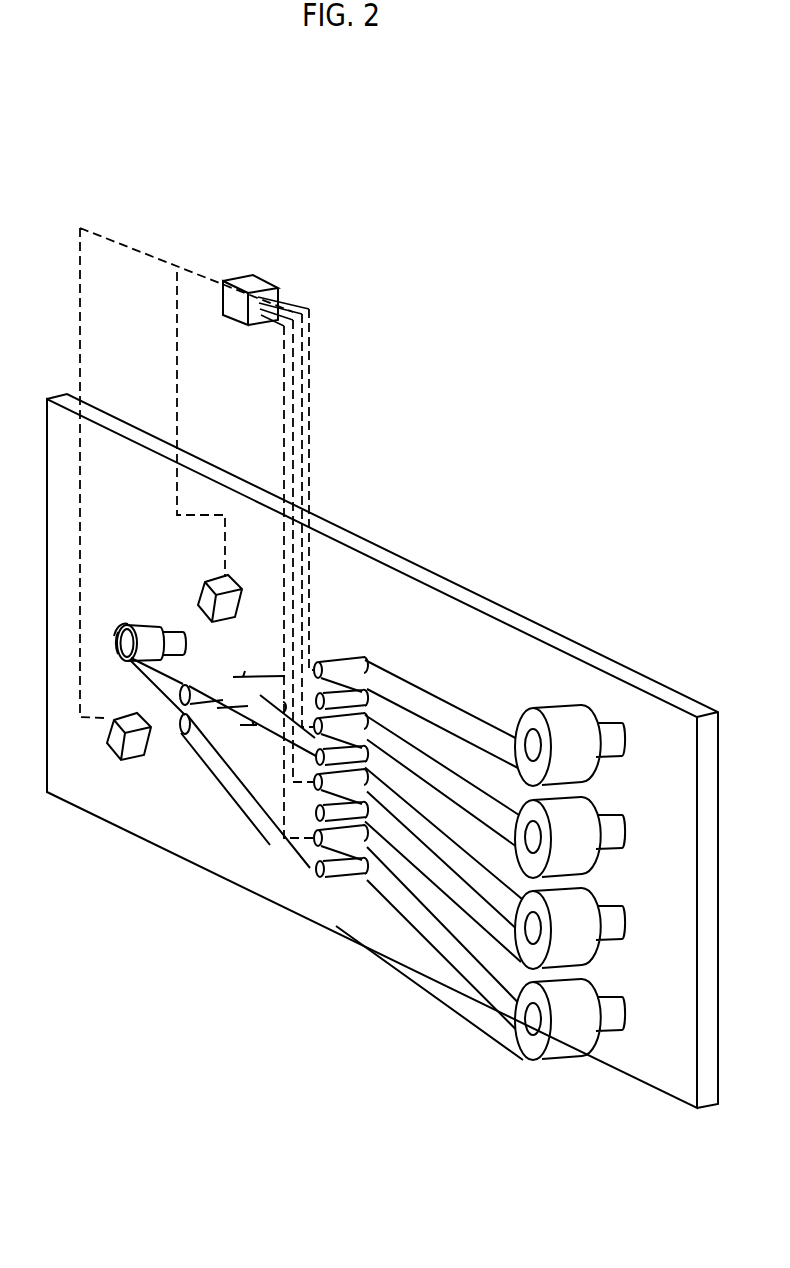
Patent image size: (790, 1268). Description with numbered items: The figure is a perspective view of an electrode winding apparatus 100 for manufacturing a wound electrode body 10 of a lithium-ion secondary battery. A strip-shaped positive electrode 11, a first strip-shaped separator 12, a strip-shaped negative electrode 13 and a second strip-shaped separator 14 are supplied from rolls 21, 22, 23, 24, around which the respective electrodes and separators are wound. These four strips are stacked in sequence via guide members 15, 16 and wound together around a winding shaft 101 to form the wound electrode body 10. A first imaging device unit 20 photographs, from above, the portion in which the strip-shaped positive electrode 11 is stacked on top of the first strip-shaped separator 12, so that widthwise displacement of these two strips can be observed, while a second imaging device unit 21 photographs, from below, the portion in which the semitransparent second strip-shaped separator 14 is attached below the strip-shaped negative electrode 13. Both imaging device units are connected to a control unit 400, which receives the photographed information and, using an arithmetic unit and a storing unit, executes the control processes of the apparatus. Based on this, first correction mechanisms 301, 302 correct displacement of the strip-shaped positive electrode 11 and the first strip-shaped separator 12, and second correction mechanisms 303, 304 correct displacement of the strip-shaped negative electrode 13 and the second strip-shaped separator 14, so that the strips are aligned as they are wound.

The electrode winding apparatus 100 is at (403, 484).
The control unit 400 is at (257, 282).
The wound electrode body 10 is at (131, 606).
The winding shaft 101 is at (120, 656).
The first imaging device unit 20 is at (203, 592).
The guide member 15 is at (194, 678).
The guide member 16 is at (196, 740).
The first correction mechanism 301 is at (352, 648).
The first correction mechanism 302 is at (382, 717).
The second correction mechanism 303 is at (385, 777).
The second correction mechanism 304 is at (325, 898).
The strip-shaped positive electrode 11 is at (468, 717).
The first strip-shaped separator 12 is at (472, 793).
The strip-shaped negative electrode 13 is at (473, 905).
The second strip-shaped separator 14 is at (413, 915).
The roll / second imaging device unit 21 is at (573, 719).
The roll 22 is at (573, 811).
The roll 23 is at (573, 902).
The roll 24 is at (573, 993).